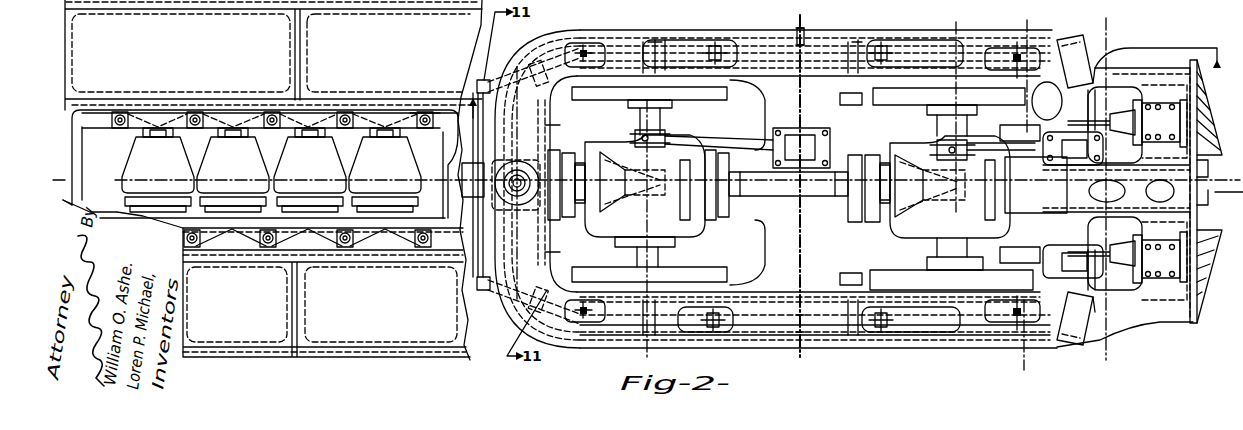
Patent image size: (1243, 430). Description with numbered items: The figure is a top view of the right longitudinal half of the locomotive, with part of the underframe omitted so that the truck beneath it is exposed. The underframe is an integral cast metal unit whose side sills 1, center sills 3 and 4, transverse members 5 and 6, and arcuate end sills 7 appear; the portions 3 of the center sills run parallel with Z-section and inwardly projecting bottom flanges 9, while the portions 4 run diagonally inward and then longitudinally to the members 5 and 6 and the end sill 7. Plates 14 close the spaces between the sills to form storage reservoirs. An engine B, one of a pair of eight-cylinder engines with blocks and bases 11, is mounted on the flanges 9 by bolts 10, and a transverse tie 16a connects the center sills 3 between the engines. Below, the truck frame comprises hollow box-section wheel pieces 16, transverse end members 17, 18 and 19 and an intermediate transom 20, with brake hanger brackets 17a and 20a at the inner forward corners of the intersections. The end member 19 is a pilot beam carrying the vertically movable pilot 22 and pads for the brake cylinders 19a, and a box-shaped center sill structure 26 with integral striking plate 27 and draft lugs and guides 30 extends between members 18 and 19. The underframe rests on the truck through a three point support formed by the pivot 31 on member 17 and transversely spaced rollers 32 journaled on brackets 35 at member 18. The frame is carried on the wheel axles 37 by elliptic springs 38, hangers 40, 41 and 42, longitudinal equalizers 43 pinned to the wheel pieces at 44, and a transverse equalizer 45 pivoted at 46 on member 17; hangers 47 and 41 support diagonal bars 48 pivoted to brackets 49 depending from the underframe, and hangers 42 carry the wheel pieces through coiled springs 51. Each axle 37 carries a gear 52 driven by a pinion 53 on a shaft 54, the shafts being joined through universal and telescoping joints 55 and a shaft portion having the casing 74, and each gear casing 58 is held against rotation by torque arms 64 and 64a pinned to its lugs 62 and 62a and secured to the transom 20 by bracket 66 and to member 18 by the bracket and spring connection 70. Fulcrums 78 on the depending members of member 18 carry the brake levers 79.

The side sills 1 is at (344, 358).
The center sills 3 is at (378, 105).
The center sill end portions 4 is at (53, 180).
The transverse member 5 is at (1217, 63).
The transverse member 6 is at (956, 22).
The arcuate end sills 7 is at (647, 357).
The bottom flanges 9 is at (452, 128).
The bolts 10 is at (264, 116).
The blocks and bases 11 is at (105, 150).
The plates 14 is at (1027, 20).
The wheel pieces 16 is at (856, 46).
The transverse tie 16a is at (70, 204).
The transverse end member 17 is at (538, 233).
The brake hanger brackets 17a is at (558, 182).
The transverse end member 18 is at (1097, 191).
The end member 19 is at (1165, 320).
The brake cylinders 19a is at (1160, 112).
The intermediate transom 20 is at (797, 233).
The brake hanger brackets 20a is at (843, 189).
The pilot 22 is at (1200, 290).
The center sill structure 26 is at (1172, 197).
The striking plate 27 is at (1218, 195).
The draft lugs and guides 30 is at (1131, 187).
The pivot 31 is at (515, 196).
The rollers 32 is at (1078, 288).
The brackets 35 is at (1087, 190).
The wheel axles 37 is at (672, 118).
The elliptic springs 38 is at (697, 42).
The hangers 40 is at (718, 48).
The hangers 41 is at (584, 48).
The hangers 42 is at (1022, 50).
The longitudinal equalizers 43 is at (753, 182).
The pin connection 44 is at (806, 45).
The transverse equalizer 45 is at (480, 218).
The center pivot 46 is at (516, 160).
The hangers 47 is at (484, 80).
The diagonal bars 48 is at (531, 310).
The brackets 49 is at (530, 62).
The coiled springs 51 is at (970, 355).
The gear 52 is at (797, 201).
The pinion 53 is at (732, 187).
The shaft 54 is at (626, 150).
The universal and telescoping joints 55 is at (568, 152).
The gear casing 58 is at (628, 240).
The lug 62 is at (658, 132).
The lug 62a is at (945, 140).
The upper torque arm 64 is at (718, 137).
The upper torque arm 64a is at (985, 140).
The bracket 66 is at (790, 143).
The bracket and spring connection 70 is at (1083, 142).
The casing 74 is at (752, 197).
The fulcrums 78 is at (1020, 135).
The brake levers 79 is at (1047, 101).
The engine B is at (299, 157).